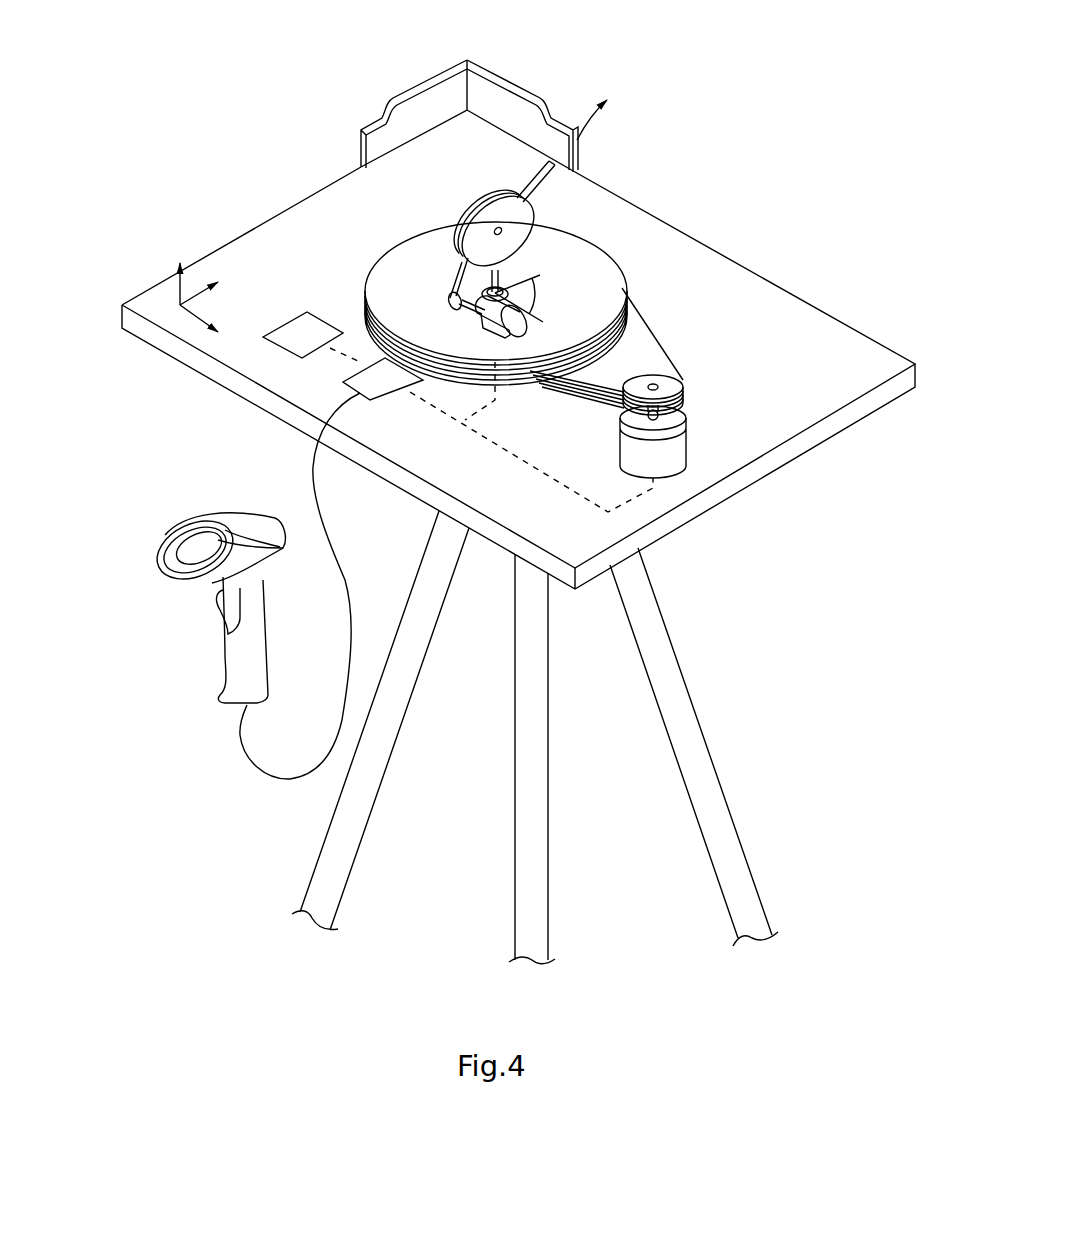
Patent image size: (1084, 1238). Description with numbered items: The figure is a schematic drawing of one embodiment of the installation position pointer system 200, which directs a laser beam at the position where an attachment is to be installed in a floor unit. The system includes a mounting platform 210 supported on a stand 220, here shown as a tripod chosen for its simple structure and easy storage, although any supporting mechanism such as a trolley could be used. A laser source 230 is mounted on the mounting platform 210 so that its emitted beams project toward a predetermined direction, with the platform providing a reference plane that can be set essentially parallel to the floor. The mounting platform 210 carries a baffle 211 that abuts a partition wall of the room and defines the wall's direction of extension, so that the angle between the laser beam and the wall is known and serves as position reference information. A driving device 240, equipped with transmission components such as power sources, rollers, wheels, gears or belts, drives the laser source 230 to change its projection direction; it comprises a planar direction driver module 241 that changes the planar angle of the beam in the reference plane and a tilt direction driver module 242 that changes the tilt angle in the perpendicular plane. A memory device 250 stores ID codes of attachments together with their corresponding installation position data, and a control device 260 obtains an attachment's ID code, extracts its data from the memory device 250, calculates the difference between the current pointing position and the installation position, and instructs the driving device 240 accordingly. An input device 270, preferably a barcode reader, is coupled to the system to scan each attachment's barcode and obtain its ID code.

The installation position pointer system 200 is at (283, 162).
The mounting platform 210 is at (812, 410).
The baffle 211 is at (430, 105).
The stand 220 is at (723, 703).
The laser source 230 is at (555, 202).
The driving device 240 is at (628, 264).
The planar direction driver module 241 is at (683, 358).
The tilt direction driver module 242 is at (445, 303).
The memory device 250 is at (293, 327).
The control device 260 is at (383, 387).
The input device 270 is at (218, 657).